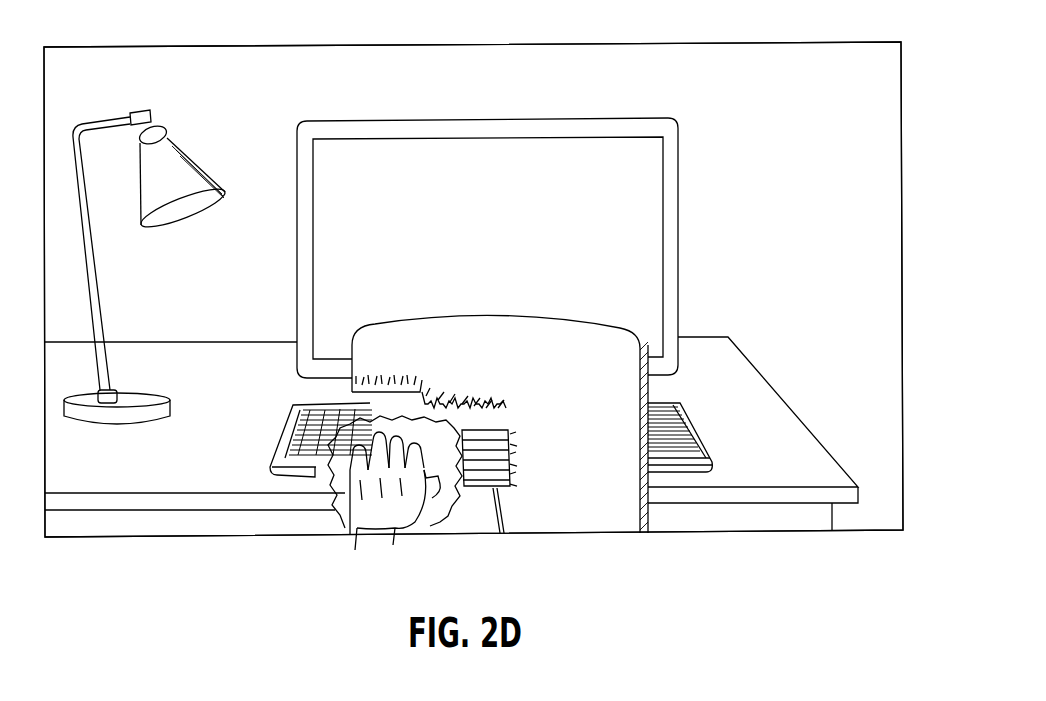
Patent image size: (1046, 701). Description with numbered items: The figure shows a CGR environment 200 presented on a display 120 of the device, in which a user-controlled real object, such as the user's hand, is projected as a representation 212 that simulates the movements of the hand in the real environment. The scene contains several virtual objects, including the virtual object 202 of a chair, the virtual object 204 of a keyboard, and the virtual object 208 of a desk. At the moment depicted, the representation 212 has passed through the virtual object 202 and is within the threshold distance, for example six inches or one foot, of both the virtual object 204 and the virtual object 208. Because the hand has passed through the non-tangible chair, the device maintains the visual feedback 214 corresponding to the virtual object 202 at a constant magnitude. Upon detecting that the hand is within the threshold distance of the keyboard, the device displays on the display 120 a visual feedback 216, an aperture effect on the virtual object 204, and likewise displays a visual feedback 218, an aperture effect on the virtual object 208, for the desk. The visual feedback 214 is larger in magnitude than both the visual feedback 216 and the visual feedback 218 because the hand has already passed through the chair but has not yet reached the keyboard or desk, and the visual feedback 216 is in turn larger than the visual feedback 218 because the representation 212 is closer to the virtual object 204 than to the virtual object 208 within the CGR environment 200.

The display 120 is at (676, 42).
The CGR environment 200 is at (878, 295).
The virtual object 202 is at (582, 352).
The virtual object 204 is at (670, 450).
The virtual object 208 is at (794, 433).
The representation 212 is at (375, 510).
The visual feedback 214 is at (478, 413).
The visual feedback 216 is at (466, 492).
The visual feedback 218 is at (417, 530).